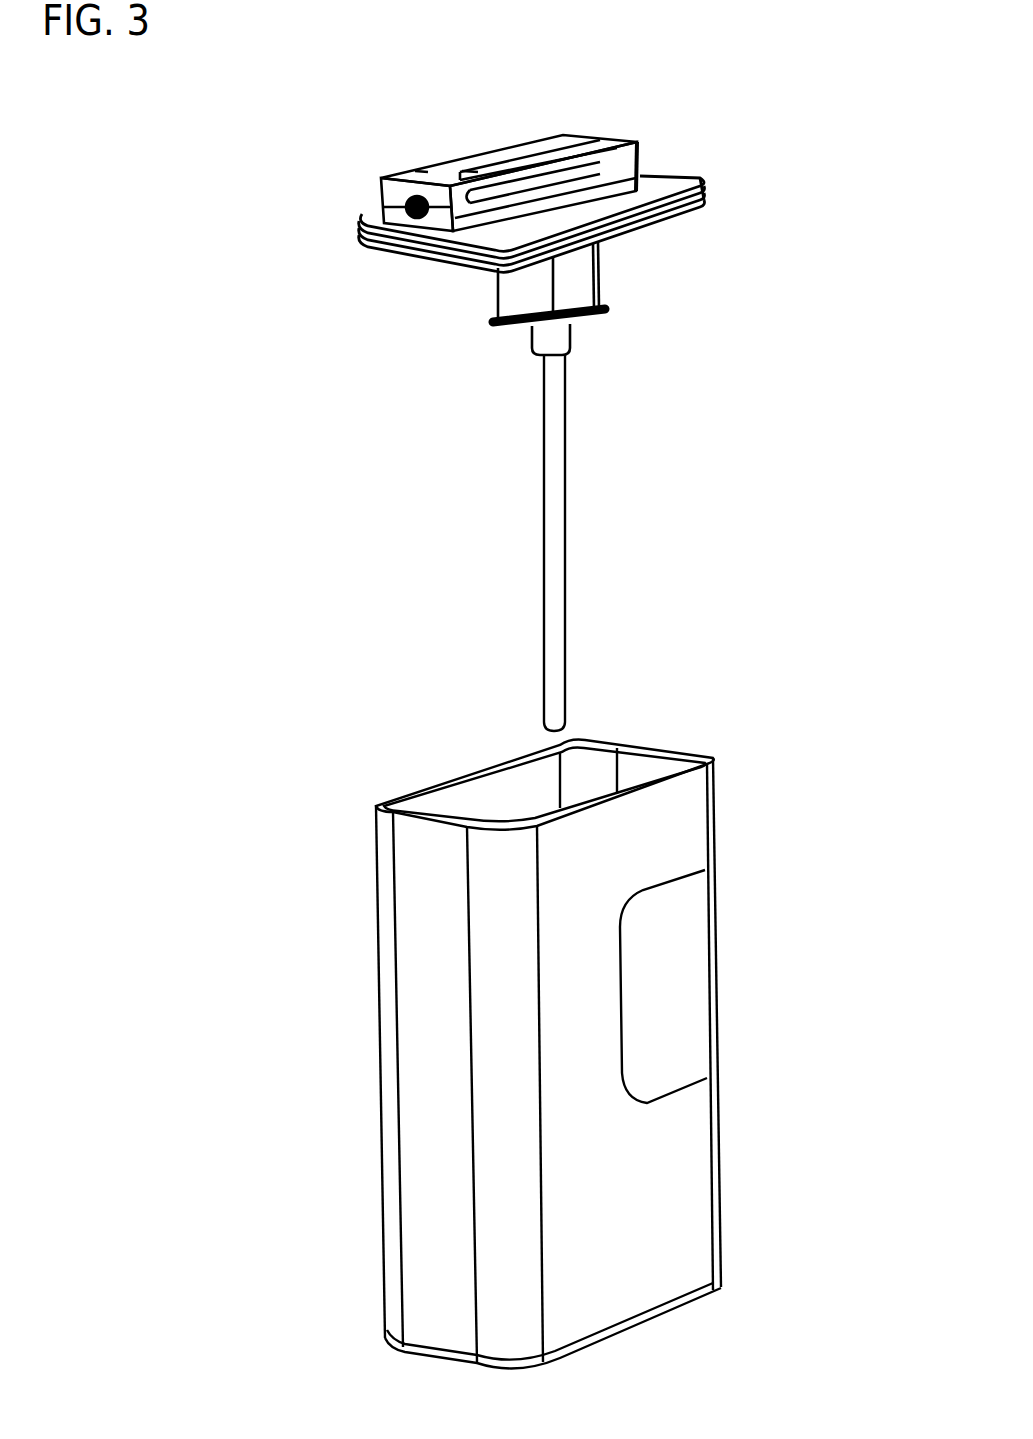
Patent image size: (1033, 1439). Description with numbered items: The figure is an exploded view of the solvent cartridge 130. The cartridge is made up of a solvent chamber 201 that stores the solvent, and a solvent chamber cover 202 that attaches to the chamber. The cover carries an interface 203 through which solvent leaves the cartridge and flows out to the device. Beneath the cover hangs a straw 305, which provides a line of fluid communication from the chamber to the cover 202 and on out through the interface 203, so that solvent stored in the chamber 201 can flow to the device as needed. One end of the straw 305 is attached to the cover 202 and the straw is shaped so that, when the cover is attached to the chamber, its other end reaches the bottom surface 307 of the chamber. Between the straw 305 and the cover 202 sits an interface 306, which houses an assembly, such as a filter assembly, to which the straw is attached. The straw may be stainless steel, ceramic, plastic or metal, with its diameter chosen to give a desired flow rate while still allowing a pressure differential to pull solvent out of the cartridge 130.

The solvent cartridge 130 is at (160, 200).
The solvent chamber 201 is at (648, 762).
The solvent chamber cover 202 is at (657, 177).
The interface 203 is at (564, 146).
The straw 305 is at (547, 463).
The interface 306 is at (583, 283).
The bottom surface 307 is at (625, 1333).